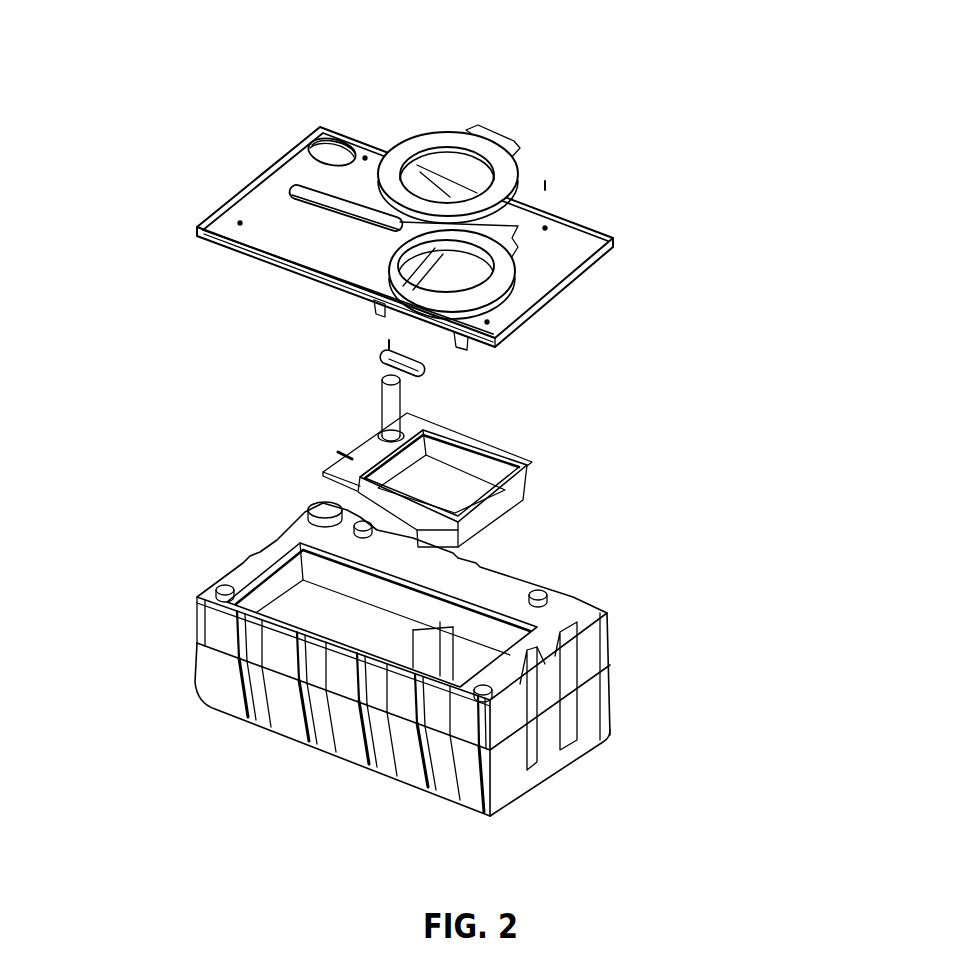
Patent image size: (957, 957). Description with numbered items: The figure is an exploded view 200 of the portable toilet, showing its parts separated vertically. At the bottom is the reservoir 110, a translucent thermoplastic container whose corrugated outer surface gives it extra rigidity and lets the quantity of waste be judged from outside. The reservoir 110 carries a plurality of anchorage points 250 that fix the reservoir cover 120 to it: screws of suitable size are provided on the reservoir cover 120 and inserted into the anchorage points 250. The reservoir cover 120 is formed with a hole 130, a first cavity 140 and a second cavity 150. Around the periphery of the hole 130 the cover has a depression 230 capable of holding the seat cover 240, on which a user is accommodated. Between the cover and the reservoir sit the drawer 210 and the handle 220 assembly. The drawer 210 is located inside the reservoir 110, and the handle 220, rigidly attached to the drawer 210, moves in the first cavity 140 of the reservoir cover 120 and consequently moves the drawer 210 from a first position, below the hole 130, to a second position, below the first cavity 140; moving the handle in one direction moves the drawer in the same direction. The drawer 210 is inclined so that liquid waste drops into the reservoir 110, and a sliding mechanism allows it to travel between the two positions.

The exploded view 200 is at (114, 101).
The reservoir 110 is at (603, 661).
The reservoir cover 120 is at (614, 245).
The hole 130 is at (453, 267).
The first cavity 140 is at (292, 194).
The second cavity 150 is at (308, 149).
The drawer 210 is at (437, 478).
The handle 220 is at (380, 393).
The depression 230 is at (518, 264).
The seat cover 240 is at (497, 178).
The anchorage points 250 is at (306, 516).